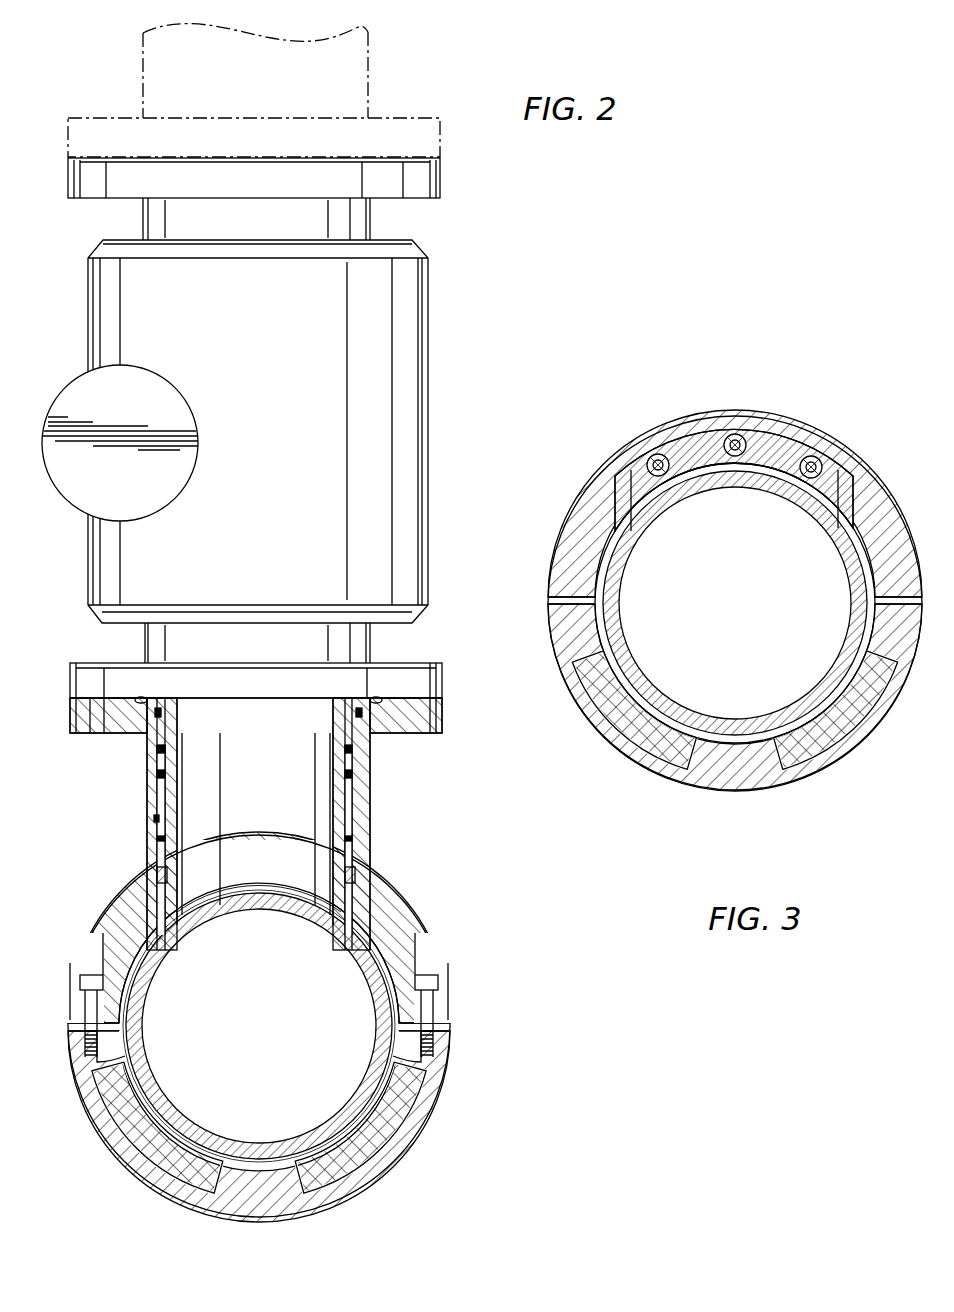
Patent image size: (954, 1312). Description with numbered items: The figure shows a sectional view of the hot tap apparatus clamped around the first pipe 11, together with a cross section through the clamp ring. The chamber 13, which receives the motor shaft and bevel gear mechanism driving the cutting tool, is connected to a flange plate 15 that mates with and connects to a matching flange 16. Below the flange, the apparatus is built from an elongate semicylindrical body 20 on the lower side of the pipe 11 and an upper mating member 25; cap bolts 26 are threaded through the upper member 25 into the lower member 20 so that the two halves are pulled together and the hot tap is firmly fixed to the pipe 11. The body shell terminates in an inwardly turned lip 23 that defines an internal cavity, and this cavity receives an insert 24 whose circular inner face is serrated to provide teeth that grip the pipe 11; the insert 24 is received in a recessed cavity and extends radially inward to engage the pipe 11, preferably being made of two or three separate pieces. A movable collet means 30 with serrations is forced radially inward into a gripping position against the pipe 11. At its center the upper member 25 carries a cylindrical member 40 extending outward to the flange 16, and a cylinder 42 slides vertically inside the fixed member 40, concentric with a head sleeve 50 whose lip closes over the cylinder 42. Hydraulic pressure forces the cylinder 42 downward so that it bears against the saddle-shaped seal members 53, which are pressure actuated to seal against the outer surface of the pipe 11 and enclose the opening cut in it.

In FIG. 2, the pipe 11 is at (257, 1150).
In FIG. 3, the pipe 11 is at (738, 725).
In FIG. 2, the chamber 13 is at (431, 291).
In FIG. 2, the flange plate 15 is at (72, 672).
In FIG. 2, the matching flange 16 is at (70, 722).
In FIG. 2, the semi-cylindrical body 20 is at (289, 1051).
In FIG. 3, the semi-cylindrical body 20 is at (704, 605).
In FIG. 2, the lip 23 is at (429, 1061).
In FIG. 3, the lip 23 is at (565, 622).
In FIG. 2, the insert 24 is at (130, 1180).
In FIG. 3, the insert 24 is at (606, 740).
In FIG. 2, the upper mating member 25 is at (396, 912).
In FIG. 3, the upper mating member 25 is at (735, 503).
In FIG. 2, the cap bolts 26 is at (430, 975).
In FIG. 3, the collet means 30 is at (781, 437).
In FIG. 2, the cylindrical member 40 is at (128, 824).
In FIG. 2, the cylinder 42 is at (157, 800).
In FIG. 2, the head sleeve 50 is at (327, 770).
In FIG. 2, the seal members 53 is at (160, 898).